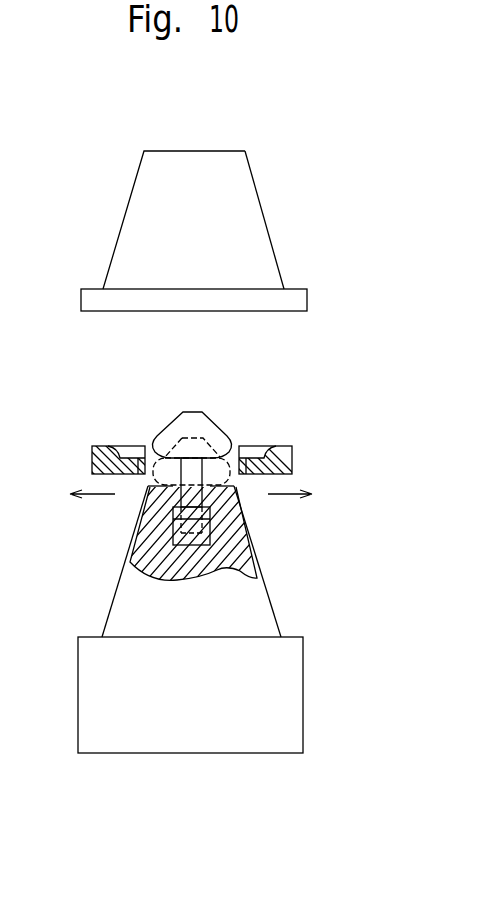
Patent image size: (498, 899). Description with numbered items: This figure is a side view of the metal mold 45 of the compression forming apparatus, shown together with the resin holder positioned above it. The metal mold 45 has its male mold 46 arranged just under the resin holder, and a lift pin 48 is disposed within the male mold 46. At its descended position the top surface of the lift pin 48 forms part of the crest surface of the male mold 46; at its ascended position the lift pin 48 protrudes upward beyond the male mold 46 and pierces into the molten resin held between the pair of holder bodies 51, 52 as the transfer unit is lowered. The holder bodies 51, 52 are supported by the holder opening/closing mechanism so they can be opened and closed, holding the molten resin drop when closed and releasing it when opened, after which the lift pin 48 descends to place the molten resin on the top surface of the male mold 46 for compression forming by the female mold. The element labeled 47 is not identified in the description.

The metal mold 45 is at (264, 202).
The male mold 46 is at (276, 610).
The upper die 47 is at (127, 243).
The lift pin 48 is at (195, 472).
The holder body 51 is at (92, 463).
The holder body 52 is at (292, 462).